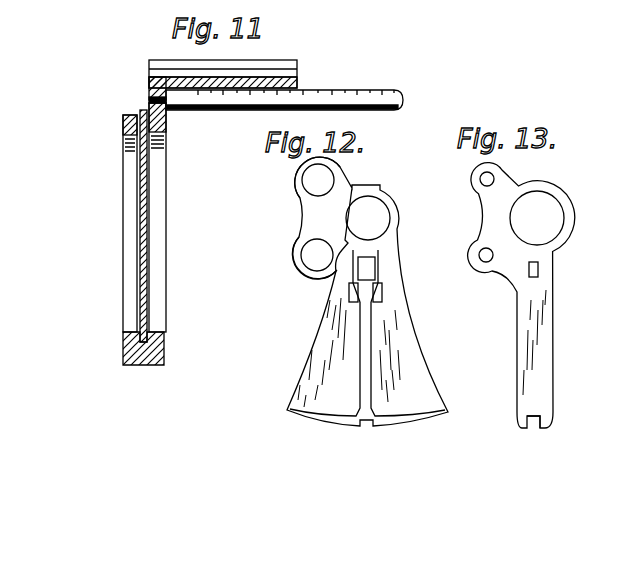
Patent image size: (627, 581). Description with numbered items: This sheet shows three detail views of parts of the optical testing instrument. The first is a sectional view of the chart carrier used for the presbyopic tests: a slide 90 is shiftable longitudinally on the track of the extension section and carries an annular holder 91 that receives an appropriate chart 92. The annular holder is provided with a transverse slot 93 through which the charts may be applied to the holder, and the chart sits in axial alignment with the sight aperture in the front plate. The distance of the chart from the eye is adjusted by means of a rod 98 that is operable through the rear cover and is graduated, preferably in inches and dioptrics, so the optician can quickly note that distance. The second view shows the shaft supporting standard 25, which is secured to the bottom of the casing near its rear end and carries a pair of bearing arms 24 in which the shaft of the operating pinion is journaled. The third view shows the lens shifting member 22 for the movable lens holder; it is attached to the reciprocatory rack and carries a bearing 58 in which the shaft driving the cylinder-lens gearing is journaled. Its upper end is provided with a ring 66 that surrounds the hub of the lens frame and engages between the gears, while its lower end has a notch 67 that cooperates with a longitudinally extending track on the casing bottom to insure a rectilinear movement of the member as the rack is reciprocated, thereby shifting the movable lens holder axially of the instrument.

In FIG. 11, the slide 90 is at (258, 64).
In FIG. 11, the rod 98 is at (342, 92).
In FIG. 11, the annular holder 91 is at (162, 279).
In FIG. 11, the chart 92 is at (144, 210).
In FIG. 11, the transverse slot 93 is at (127, 336).
In FIG. 12, the shaft supporting standard 25 is at (322, 364).
In FIG. 12, the bearing arms 24 is at (383, 294).
In FIG. 13, the lens shifting member 22 is at (521, 313).
In FIG. 13, the bearing 58 is at (480, 179).
In FIG. 13, the ring 66 is at (563, 200).
In FIG. 13, the notch 67 is at (538, 418).